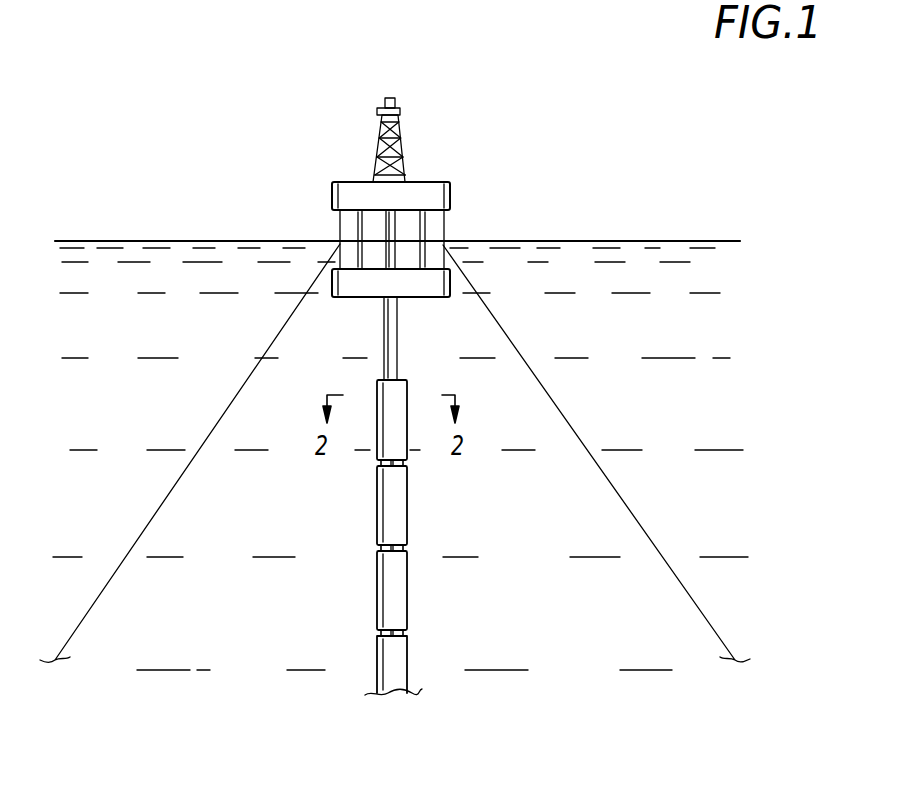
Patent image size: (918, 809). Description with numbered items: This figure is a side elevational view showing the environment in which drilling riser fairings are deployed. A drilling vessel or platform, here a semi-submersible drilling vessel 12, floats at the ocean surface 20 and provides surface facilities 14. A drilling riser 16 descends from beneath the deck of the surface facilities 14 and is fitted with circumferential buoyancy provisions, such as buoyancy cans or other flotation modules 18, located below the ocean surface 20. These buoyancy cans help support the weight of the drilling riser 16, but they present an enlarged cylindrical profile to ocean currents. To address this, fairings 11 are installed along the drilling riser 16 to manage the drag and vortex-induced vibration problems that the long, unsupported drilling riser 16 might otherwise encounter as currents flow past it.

The fairings 11 is at (400, 515).
The semi-submersible drilling vessel 12 is at (441, 122).
The surface facilities 14 is at (440, 197).
The drilling riser 16 is at (387, 228).
The flotation modules 18 is at (397, 348).
The ocean surface 20 is at (590, 240).